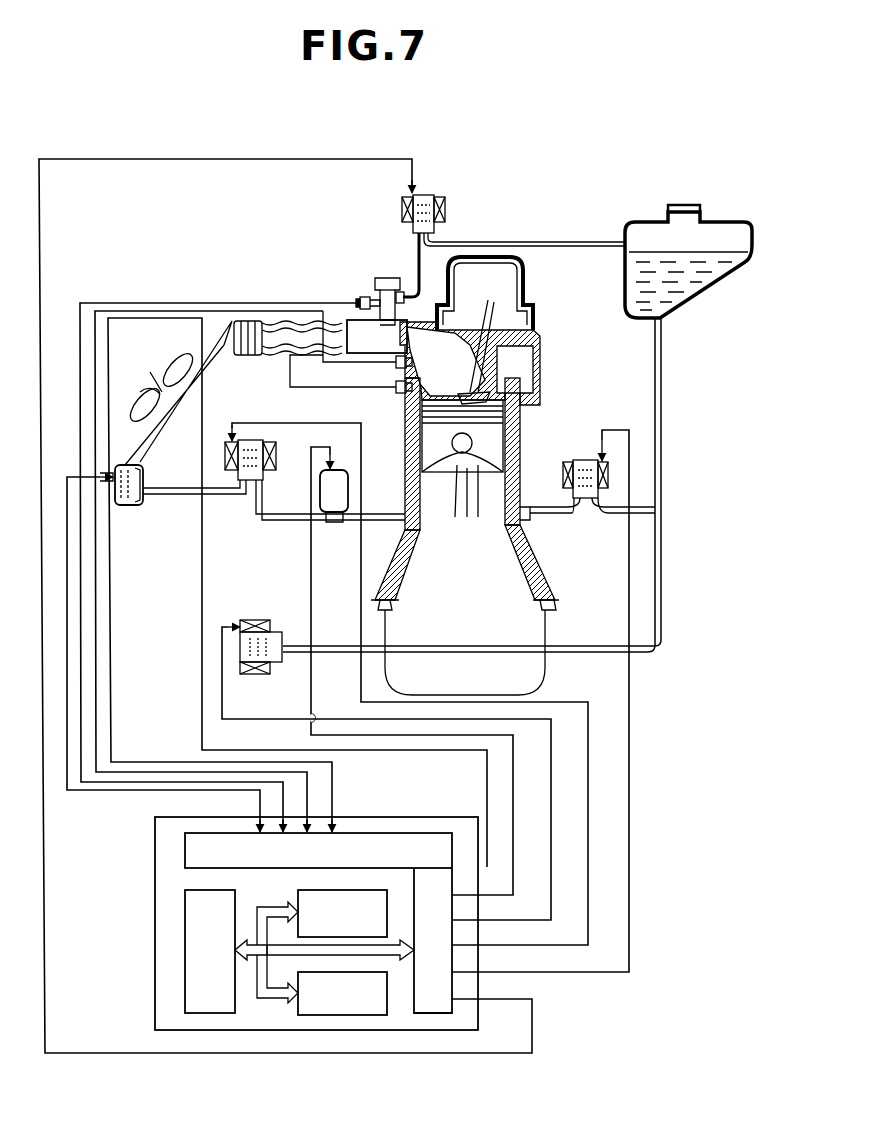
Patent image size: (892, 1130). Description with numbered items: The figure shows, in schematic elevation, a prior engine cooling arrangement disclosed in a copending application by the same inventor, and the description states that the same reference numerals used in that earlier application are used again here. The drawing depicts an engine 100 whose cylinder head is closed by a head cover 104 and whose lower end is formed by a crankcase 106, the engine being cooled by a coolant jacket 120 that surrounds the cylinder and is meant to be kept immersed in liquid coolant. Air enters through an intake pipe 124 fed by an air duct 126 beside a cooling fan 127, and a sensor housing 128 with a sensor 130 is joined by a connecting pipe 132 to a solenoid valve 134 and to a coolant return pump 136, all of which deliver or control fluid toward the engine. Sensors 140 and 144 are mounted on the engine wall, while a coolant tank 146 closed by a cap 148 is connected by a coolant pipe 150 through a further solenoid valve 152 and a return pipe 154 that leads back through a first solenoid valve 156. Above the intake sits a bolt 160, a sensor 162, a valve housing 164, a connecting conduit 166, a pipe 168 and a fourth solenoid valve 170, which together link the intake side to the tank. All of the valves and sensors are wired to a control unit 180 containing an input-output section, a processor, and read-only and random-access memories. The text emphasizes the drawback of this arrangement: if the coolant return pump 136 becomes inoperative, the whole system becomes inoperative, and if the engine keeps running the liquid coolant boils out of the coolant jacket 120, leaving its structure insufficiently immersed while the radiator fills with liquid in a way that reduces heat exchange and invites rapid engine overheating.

The engine 100 is at (544, 368).
The cylinder head cover 104 is at (536, 320).
The crankcase 106 is at (530, 565).
The coolant jacket 120 is at (521, 432).
The intake pipe 124 is at (365, 345).
The air duct 126 is at (167, 430).
The cooling fan 127 is at (144, 372).
The air flow sensor housing 128 is at (138, 505).
The pressure sensor 130 is at (124, 505).
The connecting pipe 132 is at (175, 495).
The second solenoid valve 134 is at (268, 396).
The coolant return pump 136 is at (348, 485).
The temperature sensor 140 is at (396, 362).
The second sensor 144 is at (399, 393).
The coolant tank 146 is at (624, 238).
The tank cap 148 is at (684, 206).
The coolant pipe 150 is at (572, 522).
The third solenoid valve 152 is at (611, 404).
The return pipe 154 is at (662, 590).
The first solenoid valve 156 is at (240, 647).
The bolt 160 is at (356, 302).
The sensor 162 is at (368, 297).
The valve housing 164 is at (385, 278).
The connecting conduit 166 is at (402, 292).
The pipe 168 is at (518, 241).
The fourth solenoid valve 170 is at (518, 164).
The control unit 180 is at (155, 855).